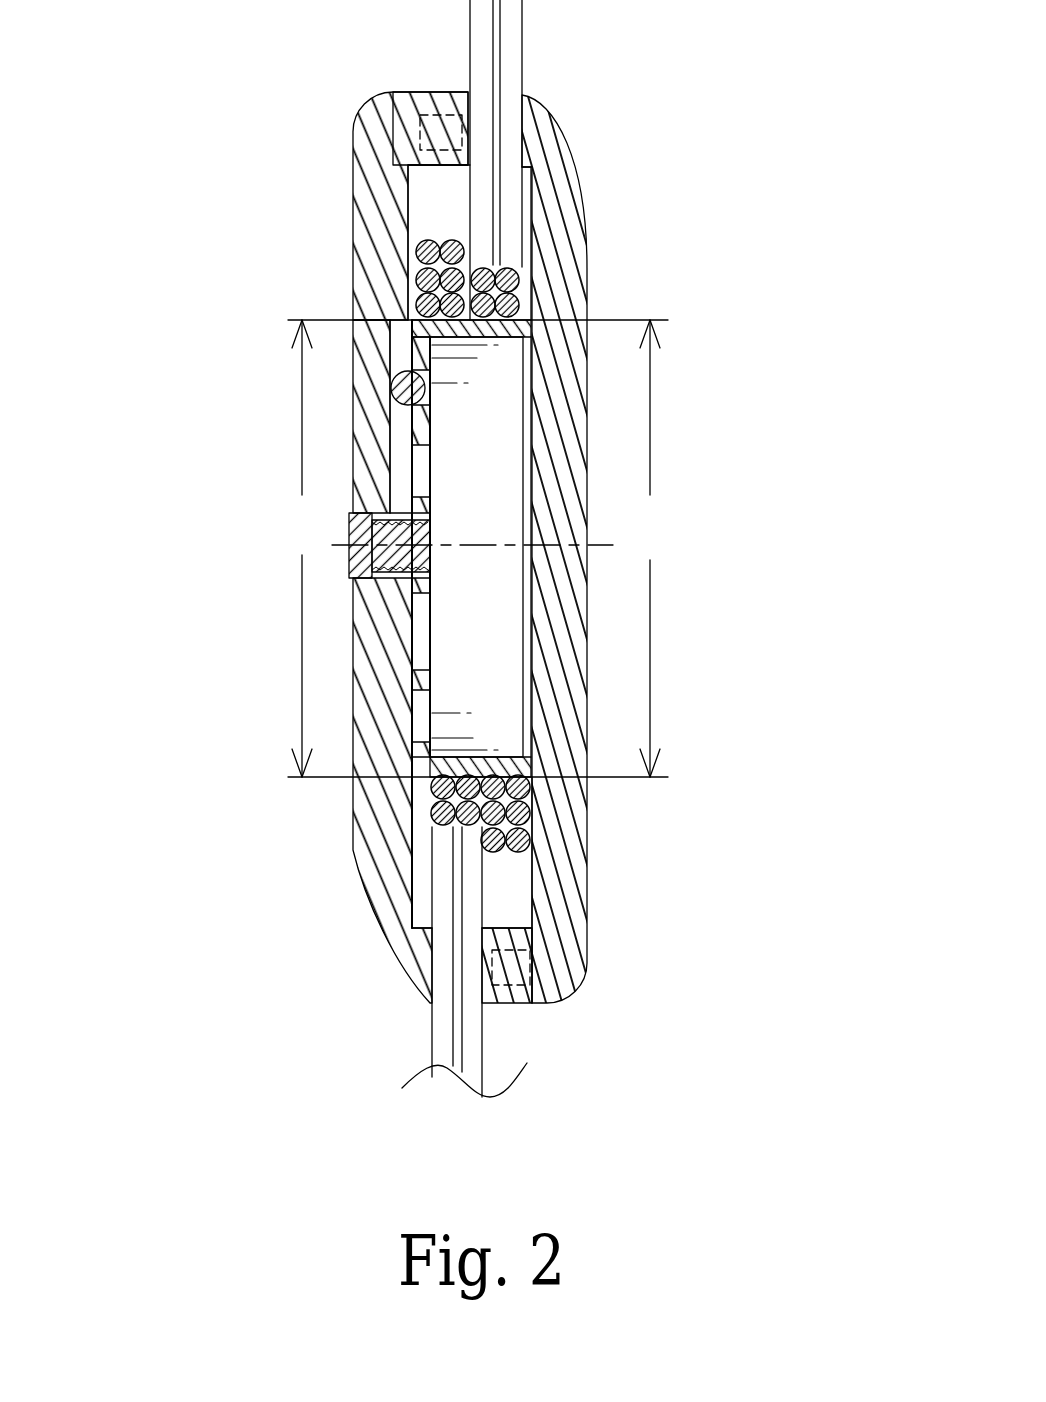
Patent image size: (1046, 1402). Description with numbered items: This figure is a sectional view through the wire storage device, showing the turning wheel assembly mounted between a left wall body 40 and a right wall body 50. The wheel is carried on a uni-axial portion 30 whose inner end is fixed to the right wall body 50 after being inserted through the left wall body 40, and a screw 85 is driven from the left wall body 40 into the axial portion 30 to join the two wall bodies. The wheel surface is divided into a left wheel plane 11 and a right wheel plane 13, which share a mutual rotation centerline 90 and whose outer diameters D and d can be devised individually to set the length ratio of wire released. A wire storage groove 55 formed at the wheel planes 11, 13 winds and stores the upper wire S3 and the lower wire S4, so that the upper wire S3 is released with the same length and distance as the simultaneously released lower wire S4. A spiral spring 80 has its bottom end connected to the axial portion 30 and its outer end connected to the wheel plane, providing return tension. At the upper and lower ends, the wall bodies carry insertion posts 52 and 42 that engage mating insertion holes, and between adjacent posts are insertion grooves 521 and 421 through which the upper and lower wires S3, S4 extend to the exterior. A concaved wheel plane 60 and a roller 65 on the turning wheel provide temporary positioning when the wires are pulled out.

The left wheel plane 11 is at (412, 313).
The right wheel plane 13 is at (522, 316).
The uni-axial portion 30 is at (393, 570).
The left wall body 40 is at (353, 218).
The insertion post 42 is at (538, 1005).
The insertion groove 421 is at (427, 958).
The right wall body 50 is at (552, 248).
The insertion post 52 is at (393, 92).
The insertion groove 521 is at (465, 108).
The wire storage groove 55 is at (438, 203).
The concaved wheel plane 60 is at (400, 465).
The roller 65 is at (408, 372).
The spiral spring 80 is at (465, 488).
The screw 85 is at (350, 560).
The rotation centerline 90 is at (673, 543).
The upper wire S3 is at (490, 152).
The lower wire S4 is at (490, 852).
The outer diameter of left wheel plane D is at (477, 548).
The outer diameter of right wheel plane d is at (649, 548).